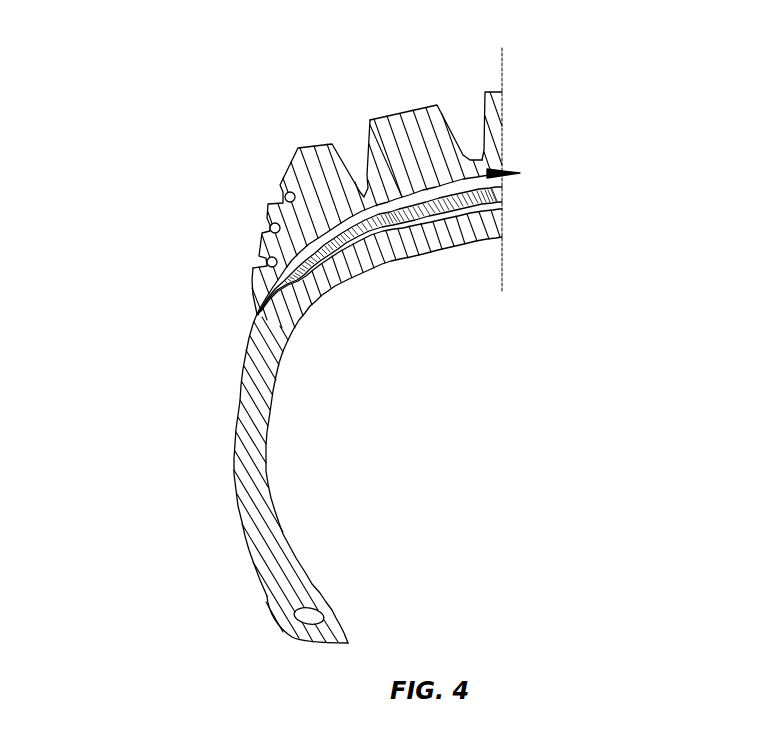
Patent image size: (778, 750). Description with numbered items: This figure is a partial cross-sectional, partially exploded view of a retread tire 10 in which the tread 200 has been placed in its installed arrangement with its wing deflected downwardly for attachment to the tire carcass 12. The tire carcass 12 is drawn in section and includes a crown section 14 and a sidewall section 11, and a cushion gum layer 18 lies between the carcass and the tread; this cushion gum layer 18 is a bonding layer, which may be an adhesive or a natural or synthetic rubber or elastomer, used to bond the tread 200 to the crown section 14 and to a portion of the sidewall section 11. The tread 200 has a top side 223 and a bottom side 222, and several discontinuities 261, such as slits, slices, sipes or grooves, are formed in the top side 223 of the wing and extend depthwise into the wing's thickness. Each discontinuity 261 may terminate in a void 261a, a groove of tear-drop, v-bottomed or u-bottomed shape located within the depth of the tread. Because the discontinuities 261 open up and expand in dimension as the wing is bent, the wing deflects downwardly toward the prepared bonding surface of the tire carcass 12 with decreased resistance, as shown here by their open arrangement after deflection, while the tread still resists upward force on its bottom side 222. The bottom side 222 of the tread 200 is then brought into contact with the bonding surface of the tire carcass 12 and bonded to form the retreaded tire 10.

The retread tire 10 is at (135, 128).
The tread 200 is at (290, 137).
The top side 223 is at (402, 118).
The bottom side 222 is at (521, 173).
The cushion gum layer 18 is at (503, 192).
The crown section 14 is at (400, 257).
The tire carcass 12 is at (238, 413).
The sidewall section 11 is at (247, 483).
The discontinuity 261 is at (270, 228).
The void 261a is at (262, 282).